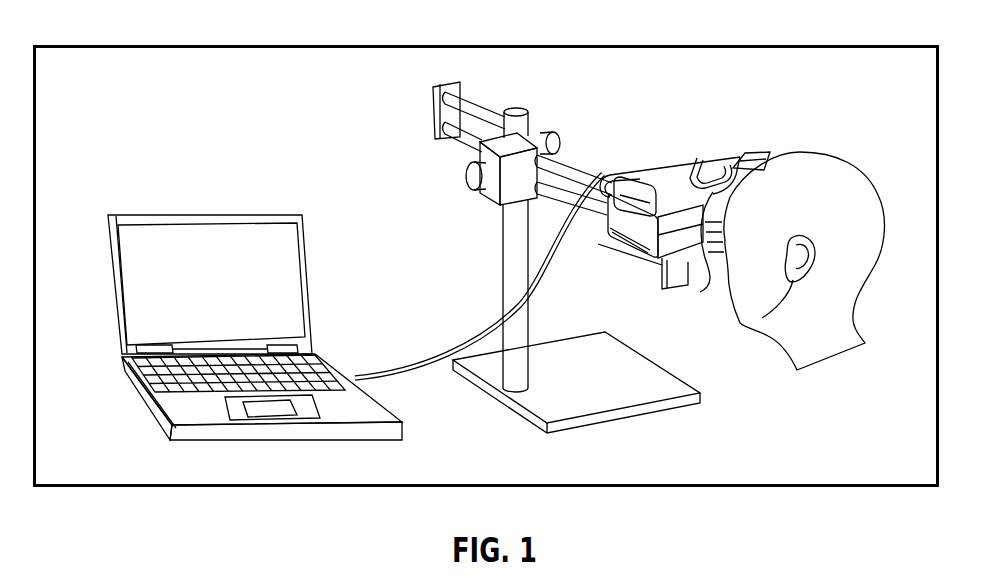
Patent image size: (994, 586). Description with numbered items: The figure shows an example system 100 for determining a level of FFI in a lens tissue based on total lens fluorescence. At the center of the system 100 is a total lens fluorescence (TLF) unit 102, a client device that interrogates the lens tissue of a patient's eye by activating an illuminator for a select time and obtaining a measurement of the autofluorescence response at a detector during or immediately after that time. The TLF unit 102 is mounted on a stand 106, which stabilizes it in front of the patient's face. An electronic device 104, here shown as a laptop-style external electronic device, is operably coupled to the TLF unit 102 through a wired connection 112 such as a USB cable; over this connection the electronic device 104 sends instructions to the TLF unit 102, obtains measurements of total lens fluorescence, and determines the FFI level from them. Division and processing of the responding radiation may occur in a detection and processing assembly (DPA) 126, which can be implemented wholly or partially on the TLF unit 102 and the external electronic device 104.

The system 100 is at (632, 81).
The total lens fluorescence (TLF) unit 102 is at (713, 144).
The electronic device 104 is at (125, 214).
The stand 106 is at (582, 170).
The wired connection 112 is at (542, 270).
The detection and processing assembly (DPA) 126 is at (148, 412).